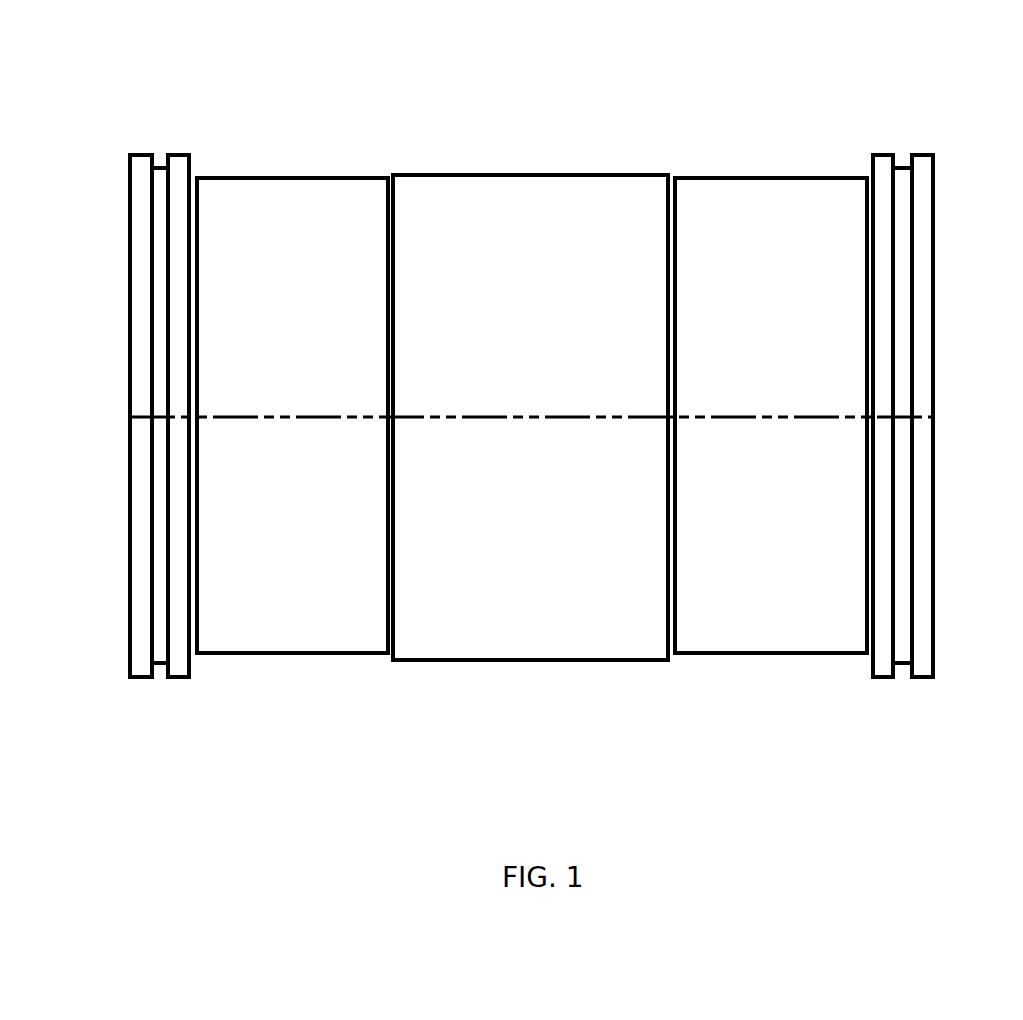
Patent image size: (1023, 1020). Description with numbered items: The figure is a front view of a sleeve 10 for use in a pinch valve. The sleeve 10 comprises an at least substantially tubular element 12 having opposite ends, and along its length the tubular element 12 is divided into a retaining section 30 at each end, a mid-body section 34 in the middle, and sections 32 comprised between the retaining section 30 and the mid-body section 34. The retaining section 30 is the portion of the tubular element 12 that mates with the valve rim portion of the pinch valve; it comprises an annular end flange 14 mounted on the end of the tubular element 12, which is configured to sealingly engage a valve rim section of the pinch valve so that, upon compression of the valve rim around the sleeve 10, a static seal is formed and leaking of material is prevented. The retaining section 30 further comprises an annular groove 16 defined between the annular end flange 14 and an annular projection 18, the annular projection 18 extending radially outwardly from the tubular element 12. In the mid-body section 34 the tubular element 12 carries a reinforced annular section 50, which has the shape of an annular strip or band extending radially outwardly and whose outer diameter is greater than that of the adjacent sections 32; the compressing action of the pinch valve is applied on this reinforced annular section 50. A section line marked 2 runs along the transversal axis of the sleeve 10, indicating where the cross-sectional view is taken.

The sleeve 10 is at (956, 82).
The tubular element 12 is at (933, 150).
The annular end flange 14 is at (140, 678).
The annular groove 16 is at (160, 678).
The annular projection 18 is at (183, 678).
The retaining section 30 is at (190, 737).
The sections 32 is at (388, 737).
The mid-body section 34 is at (531, 500).
The reinforced annular section 50 is at (398, 737).
The section line 2- 2 is at (123, 385).